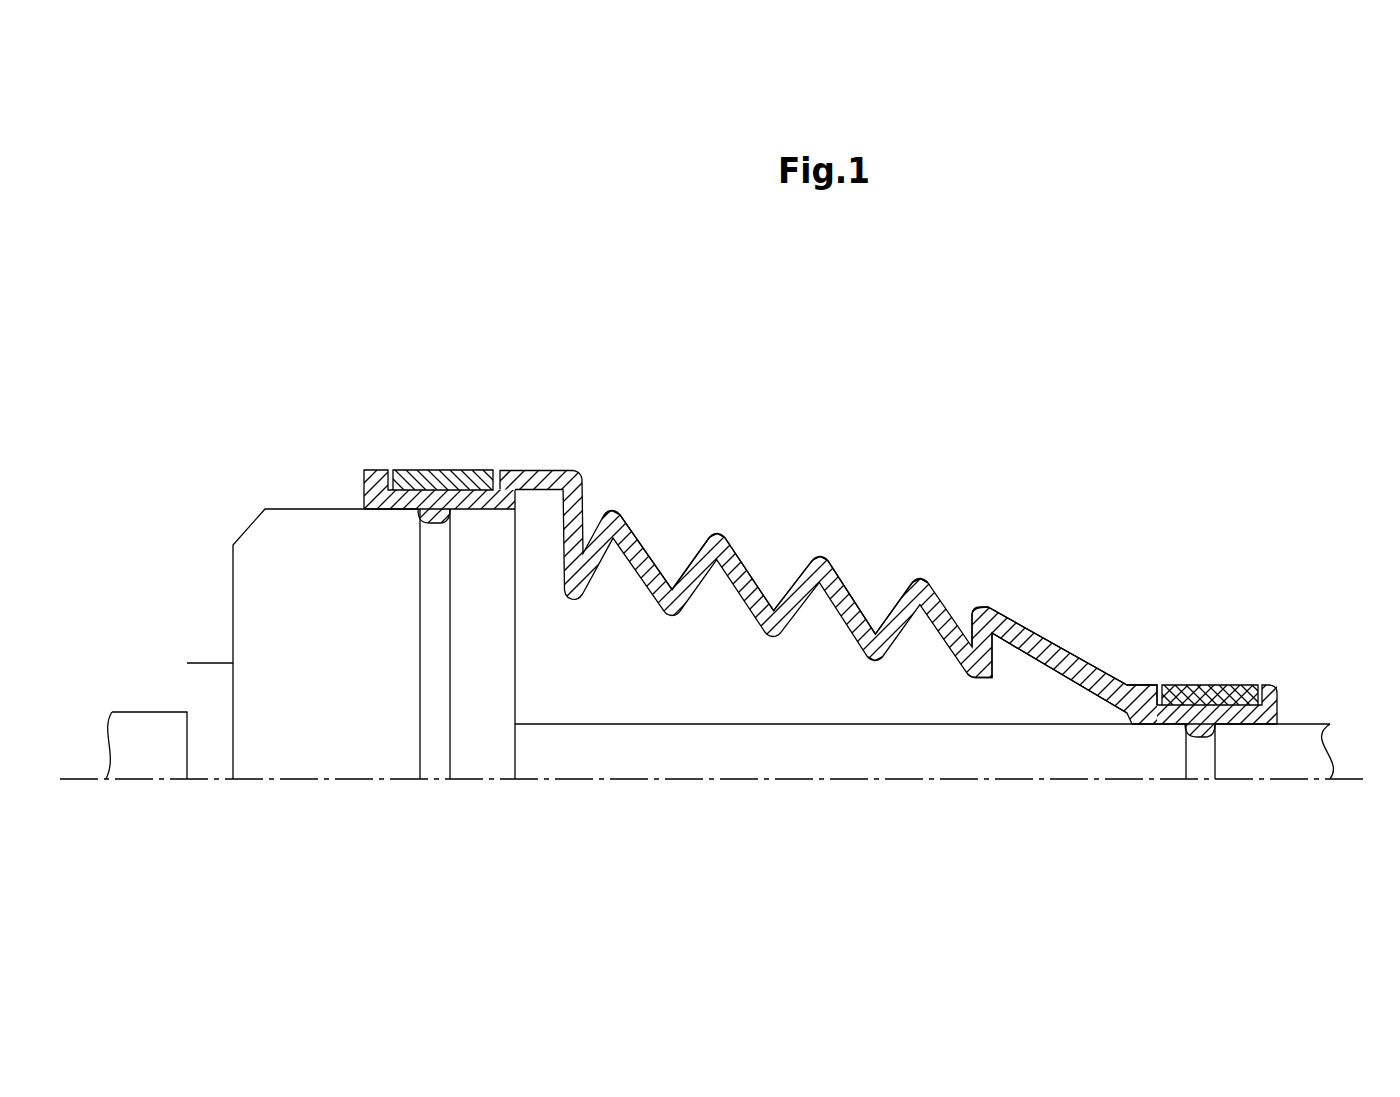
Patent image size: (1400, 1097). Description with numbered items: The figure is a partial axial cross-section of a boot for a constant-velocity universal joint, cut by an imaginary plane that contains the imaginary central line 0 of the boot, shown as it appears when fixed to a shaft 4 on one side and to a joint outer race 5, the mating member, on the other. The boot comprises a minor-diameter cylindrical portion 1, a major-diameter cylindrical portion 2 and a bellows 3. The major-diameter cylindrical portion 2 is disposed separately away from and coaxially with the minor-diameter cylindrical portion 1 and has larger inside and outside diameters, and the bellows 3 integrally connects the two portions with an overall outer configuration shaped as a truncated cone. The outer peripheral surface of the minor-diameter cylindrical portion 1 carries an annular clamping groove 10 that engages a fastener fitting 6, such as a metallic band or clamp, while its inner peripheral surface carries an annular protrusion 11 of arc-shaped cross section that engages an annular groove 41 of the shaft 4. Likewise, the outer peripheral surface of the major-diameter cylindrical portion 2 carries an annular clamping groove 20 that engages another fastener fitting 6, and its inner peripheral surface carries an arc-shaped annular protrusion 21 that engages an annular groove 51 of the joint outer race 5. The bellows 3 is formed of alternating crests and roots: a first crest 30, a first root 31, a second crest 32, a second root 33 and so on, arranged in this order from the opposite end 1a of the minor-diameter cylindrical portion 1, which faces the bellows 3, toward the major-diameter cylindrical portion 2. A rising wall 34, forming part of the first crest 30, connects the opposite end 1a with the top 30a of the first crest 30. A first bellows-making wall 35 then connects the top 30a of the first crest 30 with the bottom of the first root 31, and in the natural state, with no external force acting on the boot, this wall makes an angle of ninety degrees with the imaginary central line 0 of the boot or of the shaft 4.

The imaginary central line 0 is at (722, 780).
The minor-diameter cylindrical portion 1 is at (1227, 697).
The opposite end of the minor-diameter cylindrical portion 1a is at (1140, 697).
The major-diameter cylindrical portion 2 is at (389, 452).
The bellows 3 is at (826, 521).
The shaft 4 is at (1310, 737).
The joint outer race 5 is at (263, 535).
The fastener fitting 6 is at (462, 488).
The annular clamping groove 10 is at (1235, 697).
The annular protrusion 11 is at (1215, 756).
The annular clamping groove 20 is at (415, 488).
The annular protrusion 21 is at (420, 537).
The first crest 30 is at (998, 577).
The top of the first crest 30a is at (973, 607).
The first root 31 is at (963, 605).
The second crest 32 is at (920, 538).
The second root 33 is at (883, 589).
The rising wall 34 is at (1025, 633).
The first bellows-making wall 35 is at (987, 650).
The annular groove of the shaft 41 is at (1186, 768).
The annular groove of the joint outer race 51 is at (422, 757).